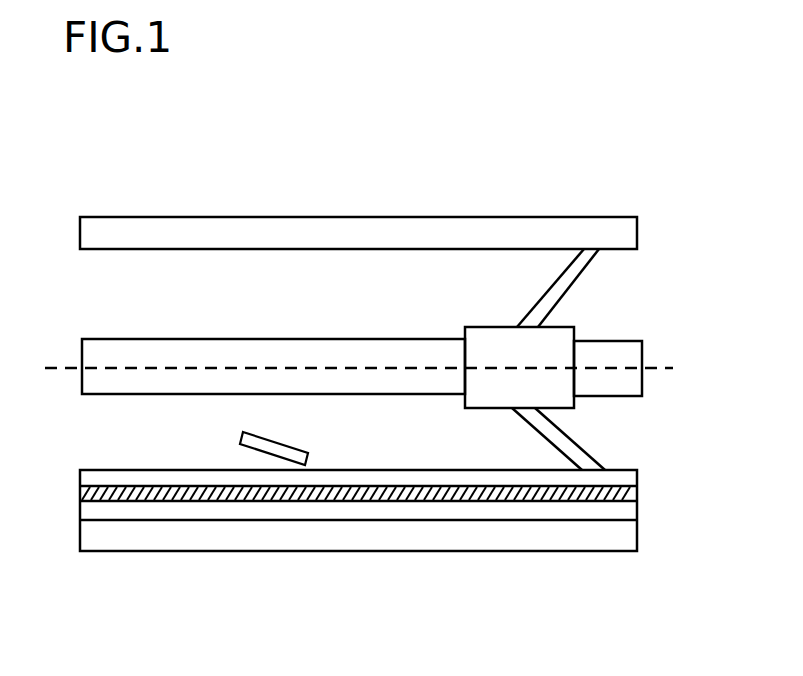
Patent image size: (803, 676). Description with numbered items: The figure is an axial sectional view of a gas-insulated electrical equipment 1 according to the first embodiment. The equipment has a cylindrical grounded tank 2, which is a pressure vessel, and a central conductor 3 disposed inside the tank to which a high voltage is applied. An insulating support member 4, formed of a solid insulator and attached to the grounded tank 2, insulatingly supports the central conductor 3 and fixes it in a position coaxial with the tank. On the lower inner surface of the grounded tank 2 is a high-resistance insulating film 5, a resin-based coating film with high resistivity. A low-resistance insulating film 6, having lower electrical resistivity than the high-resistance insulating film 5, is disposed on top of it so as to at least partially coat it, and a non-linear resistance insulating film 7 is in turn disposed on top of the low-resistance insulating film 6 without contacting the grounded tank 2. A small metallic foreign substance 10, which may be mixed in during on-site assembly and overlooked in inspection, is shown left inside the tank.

The gas-insulated electrical equipment 1 is at (222, 217).
The grounded tank 2 is at (462, 233).
The central conductor 3 is at (599, 341).
The insulating support member 4 is at (565, 448).
The high-resistance insulating film 5 is at (295, 510).
The low-resistance insulating film 6 is at (408, 498).
The non-linear resistance insulating film 7 is at (520, 478).
The metallic foreign substance 10 is at (252, 441).